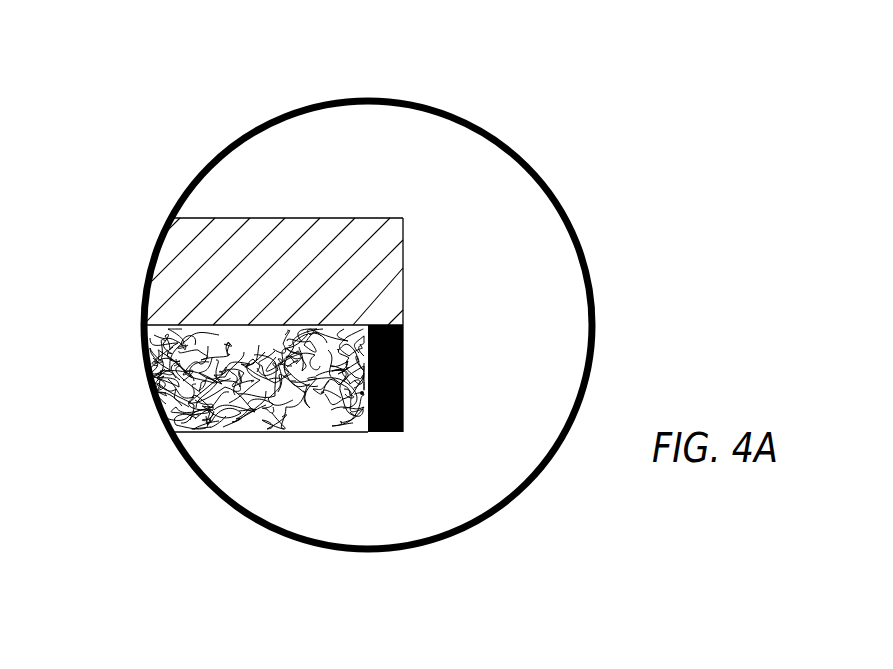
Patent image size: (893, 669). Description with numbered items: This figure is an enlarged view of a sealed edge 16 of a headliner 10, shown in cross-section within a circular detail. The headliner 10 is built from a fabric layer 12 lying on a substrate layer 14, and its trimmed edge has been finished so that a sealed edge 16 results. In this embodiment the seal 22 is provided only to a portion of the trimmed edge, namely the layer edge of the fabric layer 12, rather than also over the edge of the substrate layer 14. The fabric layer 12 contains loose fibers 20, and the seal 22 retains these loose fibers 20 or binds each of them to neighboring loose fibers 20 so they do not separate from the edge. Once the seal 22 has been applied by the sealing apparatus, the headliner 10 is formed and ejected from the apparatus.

The headliner 10 is at (313, 183).
The fabric layer 12 is at (221, 403).
The substrate layer 14 is at (193, 271).
The sealed edge 16 is at (445, 355).
The loose fibers 20 is at (362, 393).
The seal 22 is at (405, 387).